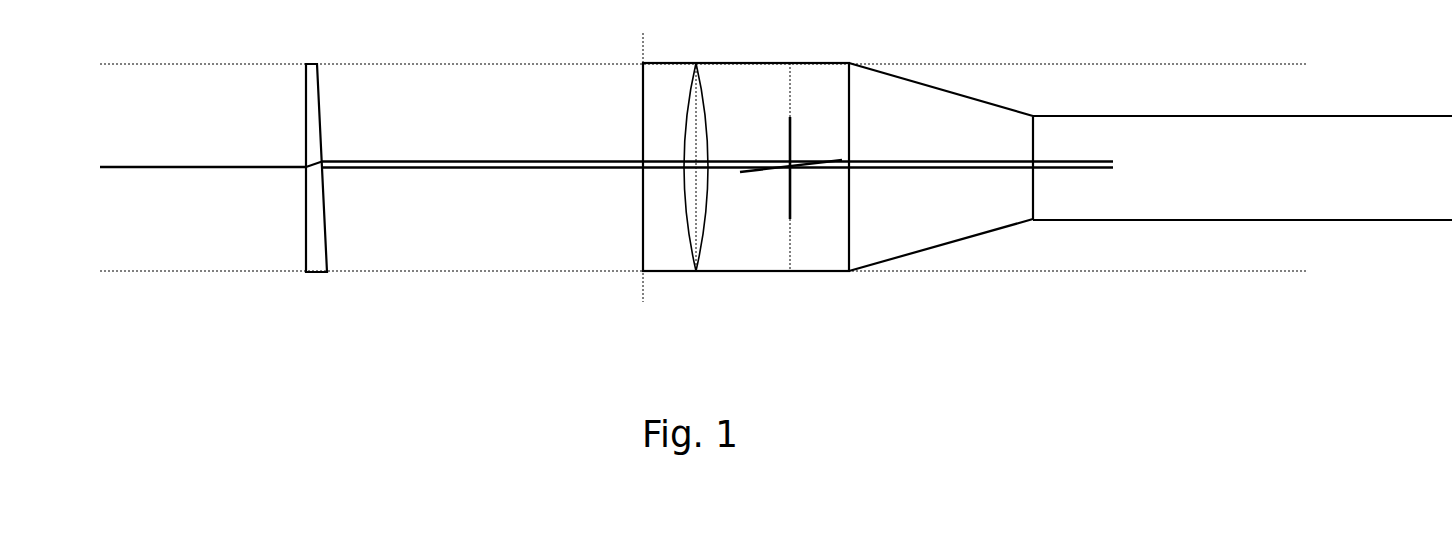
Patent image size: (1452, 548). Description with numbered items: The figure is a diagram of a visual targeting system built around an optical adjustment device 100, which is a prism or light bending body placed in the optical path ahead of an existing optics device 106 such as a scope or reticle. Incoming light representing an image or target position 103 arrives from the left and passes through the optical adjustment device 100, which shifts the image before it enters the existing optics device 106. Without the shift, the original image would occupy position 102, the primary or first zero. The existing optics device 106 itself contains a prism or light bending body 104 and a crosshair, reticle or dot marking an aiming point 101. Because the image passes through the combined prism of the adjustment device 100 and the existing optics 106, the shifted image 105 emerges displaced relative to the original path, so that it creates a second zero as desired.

The optical adjustment device 100 is at (312, 138).
The aiming point 101 is at (802, 179).
The original image position 102 is at (1081, 172).
The image or target position 103 is at (250, 166).
The prism or light bending body 104 is at (696, 133).
The shifted image 105 is at (957, 157).
The existing optics device 106 is at (1180, 155).